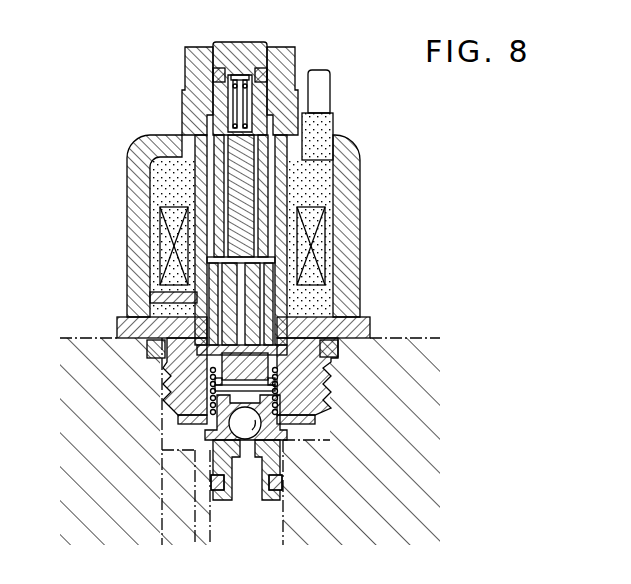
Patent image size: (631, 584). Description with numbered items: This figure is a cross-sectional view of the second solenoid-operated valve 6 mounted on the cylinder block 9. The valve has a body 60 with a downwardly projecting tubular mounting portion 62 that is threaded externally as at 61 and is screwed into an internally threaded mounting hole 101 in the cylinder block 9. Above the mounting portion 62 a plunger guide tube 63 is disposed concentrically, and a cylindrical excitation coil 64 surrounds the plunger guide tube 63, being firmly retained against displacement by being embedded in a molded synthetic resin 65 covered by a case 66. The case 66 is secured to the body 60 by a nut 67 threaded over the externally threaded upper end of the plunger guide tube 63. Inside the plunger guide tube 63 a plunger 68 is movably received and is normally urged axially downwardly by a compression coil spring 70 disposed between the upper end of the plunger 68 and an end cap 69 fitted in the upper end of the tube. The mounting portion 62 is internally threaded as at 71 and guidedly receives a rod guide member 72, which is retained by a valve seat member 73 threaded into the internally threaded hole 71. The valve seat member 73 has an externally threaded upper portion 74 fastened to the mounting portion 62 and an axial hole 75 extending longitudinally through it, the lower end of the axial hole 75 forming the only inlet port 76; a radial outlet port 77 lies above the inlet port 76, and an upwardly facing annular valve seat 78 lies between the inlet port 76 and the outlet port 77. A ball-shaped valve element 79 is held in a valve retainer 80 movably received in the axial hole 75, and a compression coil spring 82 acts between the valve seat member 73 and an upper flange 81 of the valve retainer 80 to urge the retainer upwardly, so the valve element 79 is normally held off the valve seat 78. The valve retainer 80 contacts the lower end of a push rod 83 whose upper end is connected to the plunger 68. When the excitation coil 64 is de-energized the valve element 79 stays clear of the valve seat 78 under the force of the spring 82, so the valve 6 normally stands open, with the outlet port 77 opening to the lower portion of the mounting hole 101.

The second solenoid-operated valve 6 is at (349, 98).
The cylinder block 9 is at (102, 360).
The body 60 is at (368, 318).
The external thread 61 is at (333, 380).
The tubular mounting portion 62 is at (315, 396).
The plunger guide tube 63 is at (255, 185).
The excitation coil 64 is at (320, 240).
The molded synthetic resin 65 is at (160, 220).
The case 66 is at (156, 146).
The nut 67 is at (192, 63).
The plunger 68 is at (290, 183).
The end cap 69 is at (253, 52).
The compression coil spring 70 is at (237, 76).
The internally threaded hole 71 is at (162, 467).
The rod guide member 72 is at (147, 300).
The valve seat member 73 is at (285, 460).
The externally threaded upper portion 74 is at (300, 418).
The axial hole 75 is at (268, 432).
The inlet port 76 is at (248, 495).
The radial outlet port 77 is at (207, 437).
The annular valve seat 78 is at (203, 483).
The valve element 79 is at (282, 480).
The valve retainer 80 is at (210, 394).
The upper flange 81 is at (203, 358).
The compression coil spring 82 is at (213, 413).
The push rod 83 is at (245, 302).
The mounting hole 101 is at (163, 468).